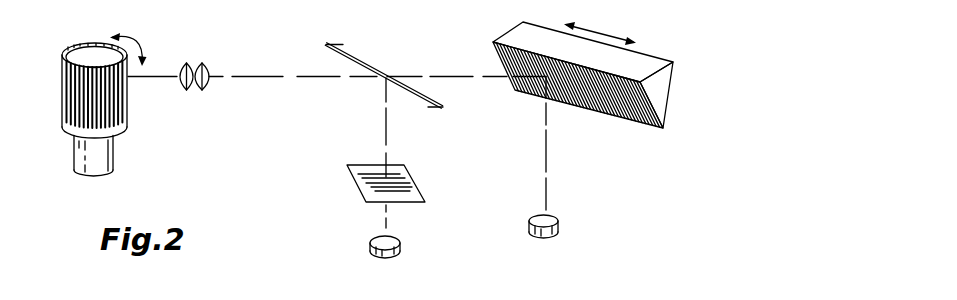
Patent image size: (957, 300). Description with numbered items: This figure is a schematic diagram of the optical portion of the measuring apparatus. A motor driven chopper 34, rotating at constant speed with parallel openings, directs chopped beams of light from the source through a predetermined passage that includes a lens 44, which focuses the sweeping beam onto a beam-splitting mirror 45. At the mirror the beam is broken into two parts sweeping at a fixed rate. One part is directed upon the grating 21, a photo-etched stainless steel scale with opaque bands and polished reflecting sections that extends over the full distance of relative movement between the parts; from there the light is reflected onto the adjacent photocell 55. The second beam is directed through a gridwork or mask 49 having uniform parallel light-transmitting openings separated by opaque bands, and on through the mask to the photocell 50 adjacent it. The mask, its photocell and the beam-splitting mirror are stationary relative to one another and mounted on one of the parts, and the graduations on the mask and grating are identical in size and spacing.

The motor driven chopper 34 is at (63, 88).
The lens 44 is at (198, 63).
The beam-splitting mirror 45 is at (370, 63).
The mask 49 is at (360, 186).
The photocell 50 is at (372, 241).
The grating 21 is at (592, 100).
The photocell 55 is at (558, 228).